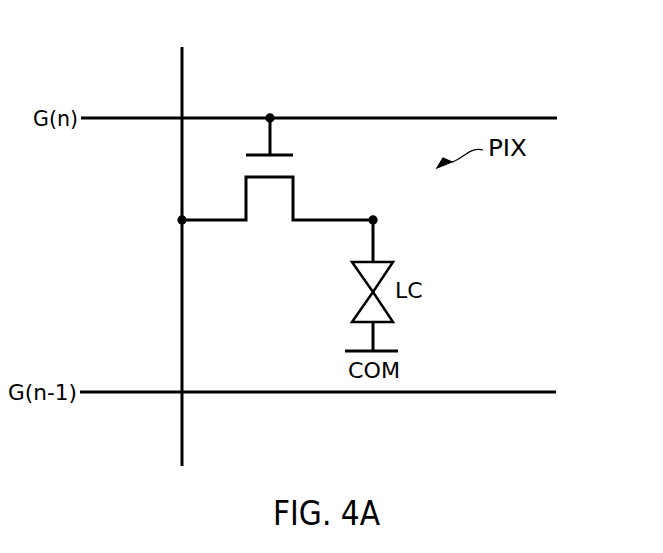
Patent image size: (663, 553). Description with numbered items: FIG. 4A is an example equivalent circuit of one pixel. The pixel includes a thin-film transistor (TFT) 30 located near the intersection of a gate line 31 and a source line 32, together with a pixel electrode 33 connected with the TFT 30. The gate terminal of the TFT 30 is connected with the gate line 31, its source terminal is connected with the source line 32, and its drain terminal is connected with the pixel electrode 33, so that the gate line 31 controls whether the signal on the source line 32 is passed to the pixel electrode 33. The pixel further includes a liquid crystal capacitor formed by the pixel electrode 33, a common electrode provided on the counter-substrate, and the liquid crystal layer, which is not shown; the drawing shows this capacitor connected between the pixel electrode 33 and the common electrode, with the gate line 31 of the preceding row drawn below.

The thin-film transistor 30 is at (270, 228).
The gate line 31 is at (545, 120).
The source line 32 is at (182, 58).
The pixel electrode 33 is at (373, 217).